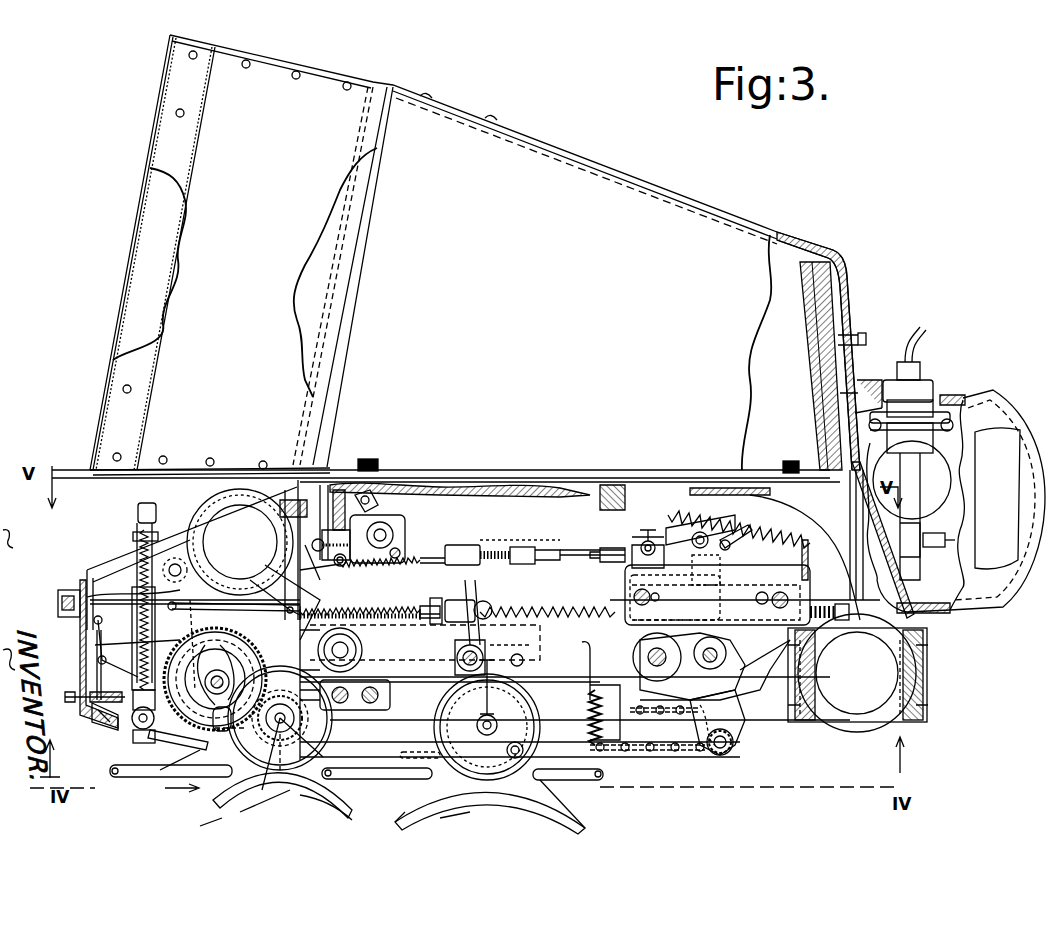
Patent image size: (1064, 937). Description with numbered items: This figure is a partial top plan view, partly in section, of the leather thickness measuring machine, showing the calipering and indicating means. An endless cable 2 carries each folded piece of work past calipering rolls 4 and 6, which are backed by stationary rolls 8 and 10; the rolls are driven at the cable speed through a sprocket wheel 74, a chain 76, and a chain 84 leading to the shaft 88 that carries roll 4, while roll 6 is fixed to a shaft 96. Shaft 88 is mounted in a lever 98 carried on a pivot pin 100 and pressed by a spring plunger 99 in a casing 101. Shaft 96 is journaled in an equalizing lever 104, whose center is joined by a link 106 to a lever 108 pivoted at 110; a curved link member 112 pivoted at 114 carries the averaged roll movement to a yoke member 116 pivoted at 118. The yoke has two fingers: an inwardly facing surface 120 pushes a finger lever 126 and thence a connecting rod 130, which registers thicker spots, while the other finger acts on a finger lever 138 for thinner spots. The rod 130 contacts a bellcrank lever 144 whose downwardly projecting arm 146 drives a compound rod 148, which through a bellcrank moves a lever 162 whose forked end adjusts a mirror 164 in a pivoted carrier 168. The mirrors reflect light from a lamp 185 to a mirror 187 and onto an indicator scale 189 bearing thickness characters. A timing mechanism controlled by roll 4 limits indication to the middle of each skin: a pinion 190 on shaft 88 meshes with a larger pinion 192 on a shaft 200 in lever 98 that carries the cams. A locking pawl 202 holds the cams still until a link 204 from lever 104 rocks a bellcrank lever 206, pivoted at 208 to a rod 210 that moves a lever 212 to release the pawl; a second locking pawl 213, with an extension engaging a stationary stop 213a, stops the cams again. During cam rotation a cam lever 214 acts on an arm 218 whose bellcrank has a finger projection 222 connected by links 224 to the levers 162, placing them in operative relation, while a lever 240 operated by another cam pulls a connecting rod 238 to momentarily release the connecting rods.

The endless cable 2 is at (128, 775).
The calipering roll 4 is at (275, 785).
The calipering roll 6 is at (490, 780).
The roll 8 is at (215, 812).
The roll 10 is at (475, 805).
The sprocket wheel 74 is at (762, 534).
The chain 76 is at (728, 522).
The chain 84 is at (678, 750).
The shaft 88 is at (278, 722).
The shaft 96 is at (492, 720).
The lever 98 is at (180, 740).
The spring plunger 99 is at (138, 708).
The pivot pin 100 is at (375, 700).
The casing 101 is at (97, 640).
The equalizing lever 104 is at (335, 800).
The link 106 is at (420, 760).
The lever 108 is at (410, 798).
The pivot 110 is at (728, 752).
The curved link member 112 is at (542, 770).
The pivot 114 is at (525, 658).
The yoke member 116 is at (445, 614).
The pivot 118 is at (348, 652).
The inwardly facing surface 120 is at (585, 608).
The finger lever 126 is at (780, 640).
The connecting rod 130 is at (630, 560).
The finger lever 138 is at (738, 690).
The bellcrank lever 144 is at (648, 540).
The downwardly projecting arm 146 is at (700, 530).
The compound rod 148 is at (522, 546).
The lever 162 is at (338, 510).
The mirror 164 is at (385, 515).
The pivoted carrier 168 is at (360, 510).
The lamp 185 is at (945, 483).
The mirror 187 is at (810, 345).
The indicator scale 189 is at (128, 243).
The pinion 190 is at (281, 772).
The larger pinion 192 is at (200, 690).
The shaft 200 is at (225, 668).
The locking pawl 202 is at (215, 679).
The link 204 is at (487, 727).
The bellcrank lever 206 is at (462, 600).
The pivot 208 is at (488, 603).
The rod 210 is at (433, 578).
The lever 212 is at (160, 625).
The locking pawl 213 is at (200, 752).
The stationary stop 213a is at (128, 735).
The cam lever 214 is at (305, 590).
The arm 218 is at (330, 590).
The finger projection 222 is at (345, 600).
The links 224 is at (340, 555).
The connecting rod 238 is at (630, 592).
The lever 240 is at (280, 605).